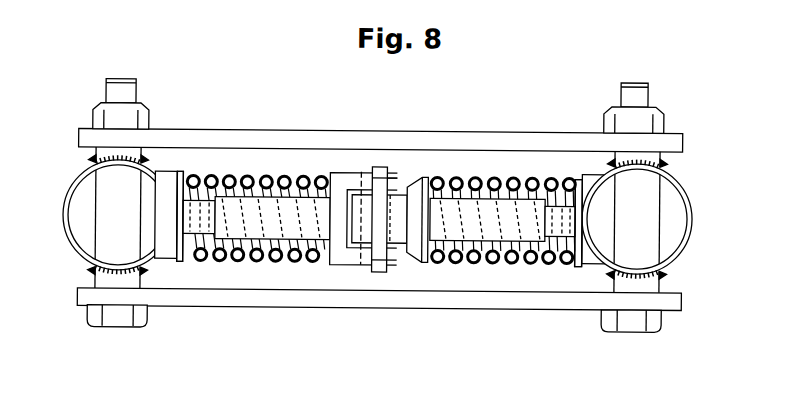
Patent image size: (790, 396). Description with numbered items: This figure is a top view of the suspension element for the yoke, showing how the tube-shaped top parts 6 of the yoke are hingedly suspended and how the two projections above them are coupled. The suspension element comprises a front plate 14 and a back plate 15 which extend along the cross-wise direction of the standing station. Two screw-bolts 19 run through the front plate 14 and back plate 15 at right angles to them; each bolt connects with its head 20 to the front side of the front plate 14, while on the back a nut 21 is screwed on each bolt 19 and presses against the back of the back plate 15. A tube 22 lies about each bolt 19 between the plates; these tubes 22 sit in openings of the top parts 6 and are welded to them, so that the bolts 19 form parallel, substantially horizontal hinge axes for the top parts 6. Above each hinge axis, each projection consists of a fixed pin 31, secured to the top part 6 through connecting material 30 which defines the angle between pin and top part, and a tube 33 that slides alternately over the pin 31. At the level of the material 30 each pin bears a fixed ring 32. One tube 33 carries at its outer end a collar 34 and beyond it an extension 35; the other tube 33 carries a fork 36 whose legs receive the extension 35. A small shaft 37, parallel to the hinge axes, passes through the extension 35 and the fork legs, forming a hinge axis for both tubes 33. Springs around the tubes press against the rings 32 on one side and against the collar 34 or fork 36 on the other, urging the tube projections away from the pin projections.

The top parts of the yoke 6 is at (63, 211).
The front plate 14 is at (240, 308).
The back plate 15 is at (238, 141).
The screw-bolt 19 is at (120, 90).
The head of the screw-bolt 20 is at (92, 322).
The nut 21 is at (95, 115).
The tube 22 is at (108, 235).
The connecting material 30 is at (592, 260).
The fixed pin 31 is at (193, 177).
The fixed ring 32 is at (178, 266).
The tube 33 is at (461, 261).
The collar 34 is at (411, 178).
The extension 35 is at (361, 172).
The fork 36 is at (341, 266).
The small shaft 37 is at (384, 272).